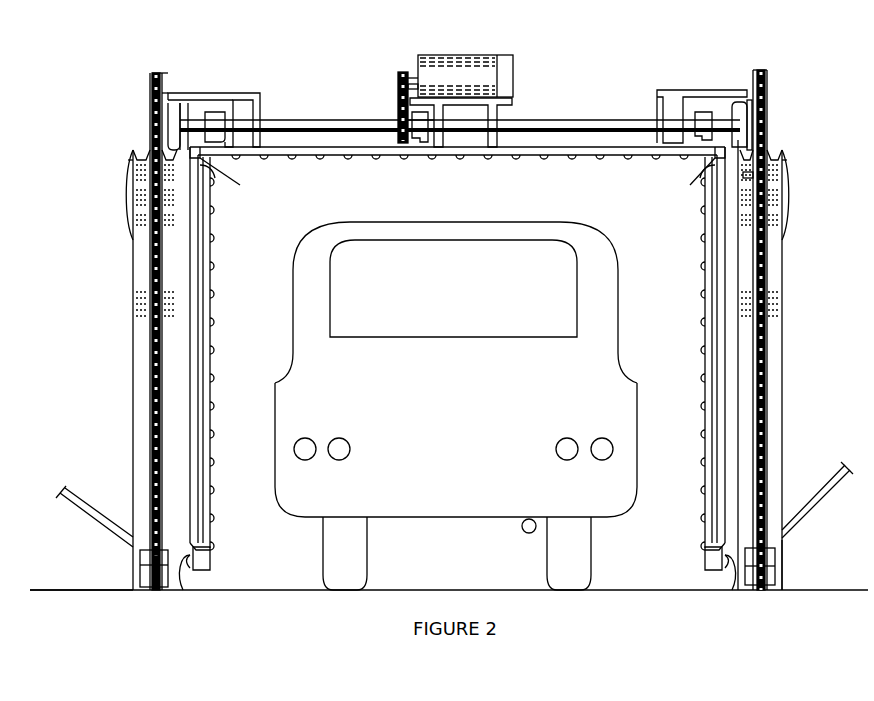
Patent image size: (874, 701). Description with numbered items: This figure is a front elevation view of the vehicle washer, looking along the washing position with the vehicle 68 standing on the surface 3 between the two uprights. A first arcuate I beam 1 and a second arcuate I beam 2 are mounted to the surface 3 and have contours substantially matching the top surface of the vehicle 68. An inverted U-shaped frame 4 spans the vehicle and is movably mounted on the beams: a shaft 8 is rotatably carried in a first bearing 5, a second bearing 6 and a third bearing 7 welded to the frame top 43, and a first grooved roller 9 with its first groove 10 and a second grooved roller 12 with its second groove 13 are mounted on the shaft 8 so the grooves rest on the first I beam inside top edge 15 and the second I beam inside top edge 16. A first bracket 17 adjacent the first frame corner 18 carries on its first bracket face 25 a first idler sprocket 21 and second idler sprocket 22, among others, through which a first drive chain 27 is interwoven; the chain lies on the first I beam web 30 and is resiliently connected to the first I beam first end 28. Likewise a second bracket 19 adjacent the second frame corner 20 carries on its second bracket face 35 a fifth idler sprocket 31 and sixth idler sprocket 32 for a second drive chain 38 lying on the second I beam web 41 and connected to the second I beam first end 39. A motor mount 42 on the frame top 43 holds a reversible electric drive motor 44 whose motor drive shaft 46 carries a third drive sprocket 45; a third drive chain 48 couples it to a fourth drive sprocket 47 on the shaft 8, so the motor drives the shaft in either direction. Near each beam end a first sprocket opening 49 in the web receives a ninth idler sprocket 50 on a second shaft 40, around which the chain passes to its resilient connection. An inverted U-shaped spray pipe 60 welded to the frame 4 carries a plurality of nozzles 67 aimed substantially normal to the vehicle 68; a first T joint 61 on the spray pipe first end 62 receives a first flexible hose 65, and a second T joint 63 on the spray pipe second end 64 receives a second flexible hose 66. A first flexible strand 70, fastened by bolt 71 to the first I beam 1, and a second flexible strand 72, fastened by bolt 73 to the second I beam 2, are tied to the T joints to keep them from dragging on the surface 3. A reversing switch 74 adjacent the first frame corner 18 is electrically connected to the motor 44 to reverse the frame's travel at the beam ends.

The first arcuate I beam 1 is at (782, 386).
The second arcuate I beam 2 is at (133, 415).
The surface 3 is at (460, 590).
The inverted U-shaped frame 4 is at (199, 491).
The first bearing 5 is at (703, 112).
The second bearing 6 is at (418, 143).
The third bearing 7 is at (218, 112).
The shaft 8 is at (352, 120).
The first grooved roller 9 is at (735, 110).
The first groove 10 is at (746, 105).
The second grooved roller 12 is at (187, 118).
The second groove 13 is at (176, 105).
The first I beam inside top edge 15 is at (738, 158).
The second I beam inside top edge 16 is at (208, 170).
The first bracket 17 is at (657, 110).
The first frame corner 18 is at (708, 160).
The second bracket 19 is at (260, 108).
The second frame corner 20 is at (175, 152).
The first idler sprocket 21 is at (768, 115).
The second idler sprocket 22 is at (766, 79).
The first bracket face 25 is at (758, 70).
The first drive chain 27 is at (768, 302).
The first I beam first end 28 is at (783, 547).
The first I beam web 30 is at (775, 150).
The fifth idler sprocket 31 is at (150, 123).
The sixth idler sprocket 32 is at (150, 94).
The second bracket face 35 is at (160, 73).
The second drive chain 38 is at (150, 332).
The second I beam first end 39 is at (133, 585).
The second shaft 40 is at (148, 569).
The second I beam web 41 is at (170, 158).
The motor mount 42 is at (497, 110).
The frame top 43 is at (460, 155).
The reversible electric drive motor 44 is at (468, 55).
The third drive sprocket 45 is at (398, 83).
The motor drive shaft 46 is at (413, 80).
The fourth drive sprocket 47 is at (411, 140).
The third drive chain 48 is at (398, 107).
The first sprocket opening 49 is at (143, 560).
The ninth idler sprocket 50 is at (152, 572).
The inverted U-shaped spray pipe 60 is at (214, 351).
The first T joint 61 is at (704, 552).
The spray pipe first end 62 is at (703, 518).
The second T joint 63 is at (212, 553).
The spray pipe second end 64 is at (211, 518).
The first flexible hose 65 is at (836, 498).
The second flexible hose 66 is at (84, 514).
The nozzles 67 is at (582, 163).
The vehicle 68 is at (597, 238).
The first flexible strand 70 is at (790, 201).
The bolt 71 is at (789, 166).
The second flexible strand 72 is at (130, 201).
The bolt 73 is at (130, 171).
The reversing switch 74 is at (743, 176).